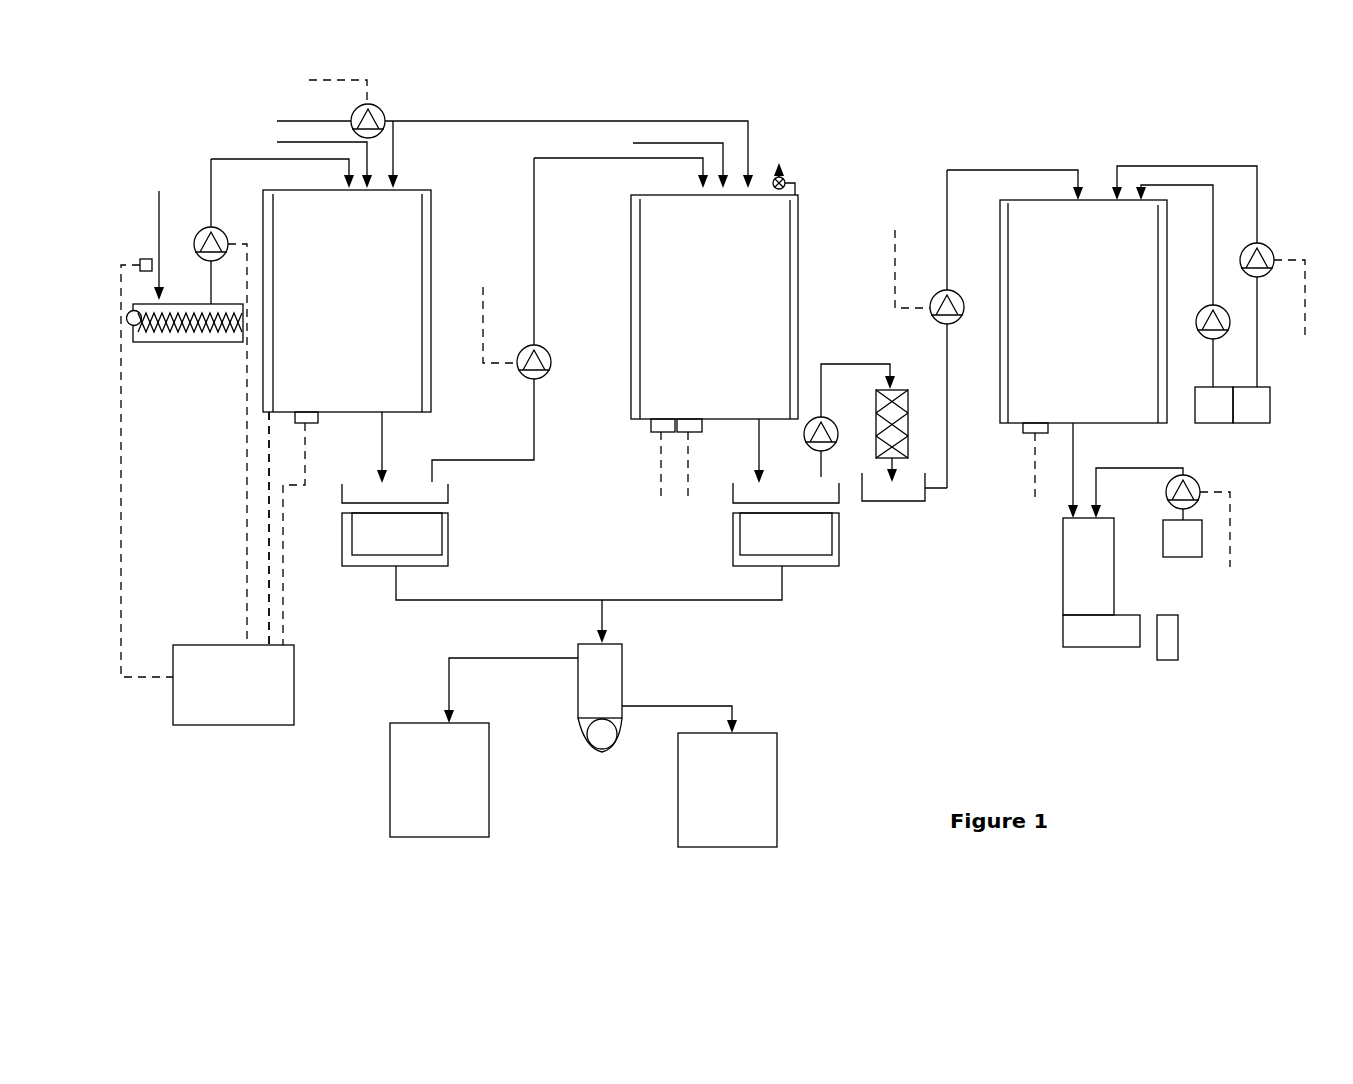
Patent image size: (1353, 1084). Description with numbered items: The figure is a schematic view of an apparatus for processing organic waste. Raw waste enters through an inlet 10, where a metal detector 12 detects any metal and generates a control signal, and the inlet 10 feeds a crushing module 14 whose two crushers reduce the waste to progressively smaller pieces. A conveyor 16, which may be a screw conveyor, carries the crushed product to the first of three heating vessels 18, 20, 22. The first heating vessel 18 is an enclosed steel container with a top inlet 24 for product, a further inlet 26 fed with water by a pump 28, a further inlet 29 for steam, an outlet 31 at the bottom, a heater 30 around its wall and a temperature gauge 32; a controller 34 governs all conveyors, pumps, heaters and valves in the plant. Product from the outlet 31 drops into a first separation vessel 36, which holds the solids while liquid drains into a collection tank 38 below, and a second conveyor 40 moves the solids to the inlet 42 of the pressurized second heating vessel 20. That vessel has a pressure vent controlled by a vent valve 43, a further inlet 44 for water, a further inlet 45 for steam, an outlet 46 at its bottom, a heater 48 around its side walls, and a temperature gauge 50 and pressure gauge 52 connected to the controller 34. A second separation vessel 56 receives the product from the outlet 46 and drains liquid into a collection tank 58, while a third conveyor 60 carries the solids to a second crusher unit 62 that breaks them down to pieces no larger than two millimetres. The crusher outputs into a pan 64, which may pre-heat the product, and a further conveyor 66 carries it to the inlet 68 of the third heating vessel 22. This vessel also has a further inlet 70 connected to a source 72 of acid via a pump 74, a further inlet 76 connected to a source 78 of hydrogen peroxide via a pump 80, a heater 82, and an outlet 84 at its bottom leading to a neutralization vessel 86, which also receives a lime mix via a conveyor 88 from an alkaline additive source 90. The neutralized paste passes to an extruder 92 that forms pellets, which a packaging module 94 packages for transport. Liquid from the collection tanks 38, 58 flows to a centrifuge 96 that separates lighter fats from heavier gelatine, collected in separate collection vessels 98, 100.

The inlet 10 is at (155, 222).
The metal detector 12 is at (146, 258).
The crushing module 14 is at (183, 343).
The conveyor 16 is at (205, 229).
The first heating vessel 18 is at (347, 301).
The second heating vessel 20 is at (714, 307).
The third heating vessel 22 is at (1083, 311).
The inlet 24 is at (342, 177).
The further inlet 26 is at (395, 178).
The pump 28 is at (381, 110).
The further inlet 29 is at (368, 156).
The heater 30 is at (426, 246).
The outlet 31 is at (382, 440).
The temperature gauge 32 is at (312, 423).
The controller 34 is at (290, 677).
The first separation vessel 36 is at (448, 493).
The collection tank 38 is at (448, 540).
The second conveyor 40 is at (546, 350).
The inlet 42 is at (700, 182).
The vent valve 43 is at (788, 183).
The further inlet 44 is at (782, 165).
The further inlet 45 is at (724, 153).
The outlet 46 is at (757, 432).
The heater 48 is at (633, 355).
The temperature gauge 50 is at (653, 427).
The pressure gauge 52 is at (683, 431).
The second separation vessel 56 is at (727, 497).
The collection tank 58 is at (733, 541).
The third conveyor 60 is at (838, 362).
The second crusher unit 62 is at (900, 412).
The pan 64 is at (878, 500).
The further conveyor 66 is at (948, 410).
The inlet 68 is at (1078, 183).
The further inlet 70 is at (1117, 183).
The source of acid 72 is at (1252, 424).
The pump 74 is at (1268, 249).
The further inlet 76 is at (1141, 190).
The source of hydrogen peroxide 78 is at (1208, 423).
The pump 80 is at (1205, 315).
The heater 82 is at (1000, 307).
The outlet 84 is at (1030, 434).
The neutralization vessel 86 is at (1063, 557).
The conveyor 88 is at (1168, 492).
The alkaline additive source 90 is at (1180, 557).
The extruder 92 is at (1063, 631).
The packaging module 94 is at (1178, 640).
The centrifuge 96 is at (590, 697).
The collection vessel 98 is at (489, 800).
The collection vessel 100 is at (678, 800).